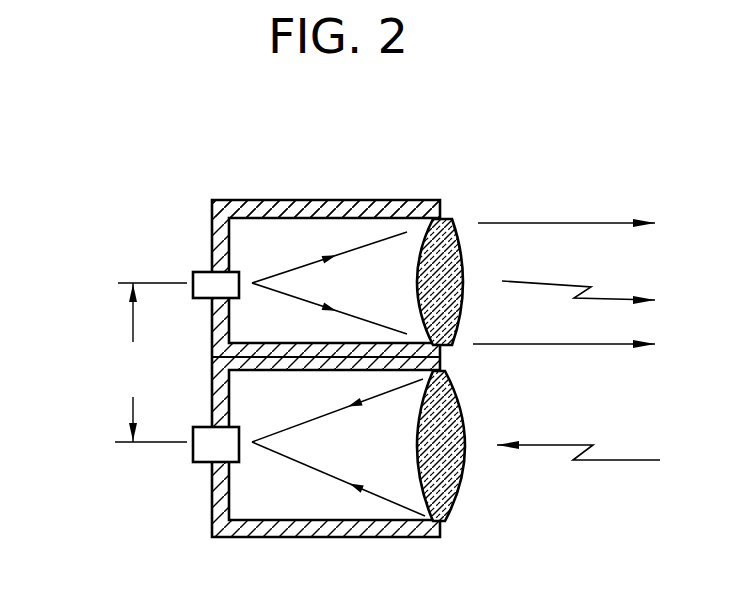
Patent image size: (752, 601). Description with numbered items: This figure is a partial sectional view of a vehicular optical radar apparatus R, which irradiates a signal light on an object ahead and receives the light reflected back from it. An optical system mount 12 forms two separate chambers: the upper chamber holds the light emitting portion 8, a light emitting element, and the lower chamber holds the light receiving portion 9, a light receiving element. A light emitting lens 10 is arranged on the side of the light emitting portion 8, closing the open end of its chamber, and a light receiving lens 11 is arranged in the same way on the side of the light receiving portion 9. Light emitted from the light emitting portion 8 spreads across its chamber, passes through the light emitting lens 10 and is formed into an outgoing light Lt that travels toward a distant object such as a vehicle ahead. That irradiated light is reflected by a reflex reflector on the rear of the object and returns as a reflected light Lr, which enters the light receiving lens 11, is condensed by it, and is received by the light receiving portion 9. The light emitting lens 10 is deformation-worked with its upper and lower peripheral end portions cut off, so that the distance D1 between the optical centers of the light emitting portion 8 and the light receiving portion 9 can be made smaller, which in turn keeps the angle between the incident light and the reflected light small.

The vehicular optical radar apparatus R is at (392, 191).
The optical system mount 12 is at (288, 210).
The light emitting portion 8 is at (200, 280).
The light receiving portion 9 is at (200, 448).
The light emitting lens 10 is at (458, 222).
The light receiving lens 11 is at (455, 482).
The outgoing light Lt is at (584, 283).
The reflected light Lr is at (597, 459).
The distance between optical centers D1 is at (151, 362).